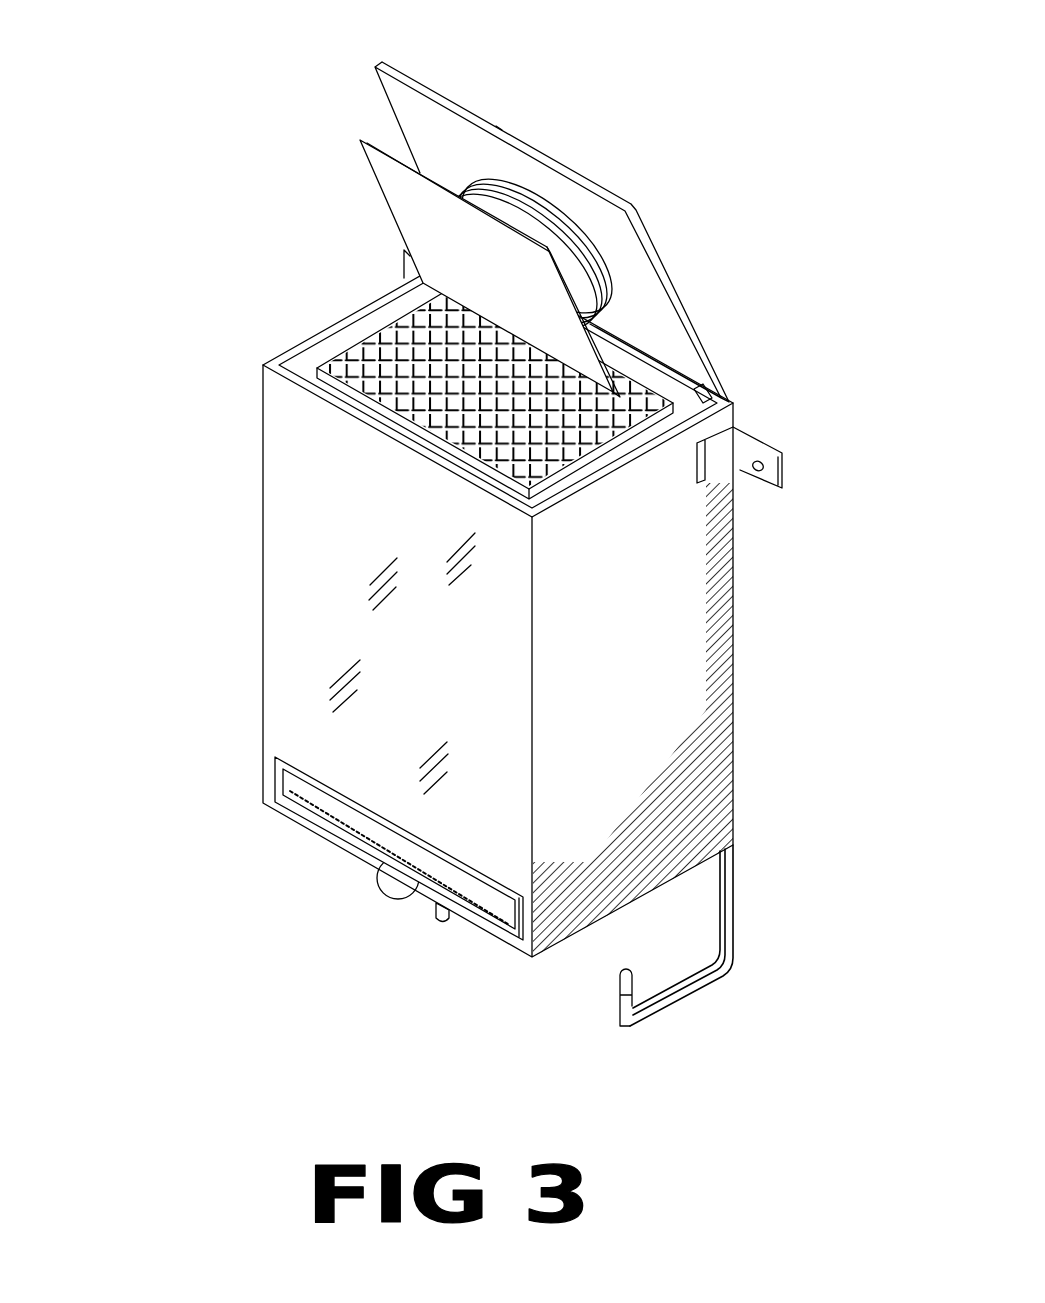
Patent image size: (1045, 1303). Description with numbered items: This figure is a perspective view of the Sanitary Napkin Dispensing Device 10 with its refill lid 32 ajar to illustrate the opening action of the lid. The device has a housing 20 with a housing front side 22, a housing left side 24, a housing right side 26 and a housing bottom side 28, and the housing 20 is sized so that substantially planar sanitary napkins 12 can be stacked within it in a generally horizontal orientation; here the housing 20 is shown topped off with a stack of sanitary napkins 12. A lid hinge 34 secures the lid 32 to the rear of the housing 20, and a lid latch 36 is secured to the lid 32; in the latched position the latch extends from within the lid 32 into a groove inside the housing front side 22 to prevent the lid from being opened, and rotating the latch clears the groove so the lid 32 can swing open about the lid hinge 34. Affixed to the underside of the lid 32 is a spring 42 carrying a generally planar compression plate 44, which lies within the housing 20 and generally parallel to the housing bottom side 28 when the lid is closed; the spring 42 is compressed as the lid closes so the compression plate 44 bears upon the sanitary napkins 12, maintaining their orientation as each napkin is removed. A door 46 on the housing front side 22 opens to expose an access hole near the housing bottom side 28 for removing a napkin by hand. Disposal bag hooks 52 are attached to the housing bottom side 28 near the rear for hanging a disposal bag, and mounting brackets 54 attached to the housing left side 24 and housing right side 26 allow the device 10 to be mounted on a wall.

The Sanitary Napkin Dispensing Device 10 is at (240, 170).
The sanitary napkin 12 is at (387, 327).
The housing 20 is at (260, 550).
The housing front side 22 is at (298, 670).
The housing left side 24 is at (260, 362).
The housing right side 26 is at (667, 658).
The housing bottom side 28 is at (660, 883).
The lid 32 is at (562, 158).
The lid hinge 34 is at (707, 403).
The lid latch 36 is at (500, 132).
The spring 42 is at (587, 230).
The compression plate 44 is at (592, 325).
The door 46 is at (277, 787).
The disposal bag hooks 52 is at (438, 912).
The mounting brackets 54 is at (767, 488).